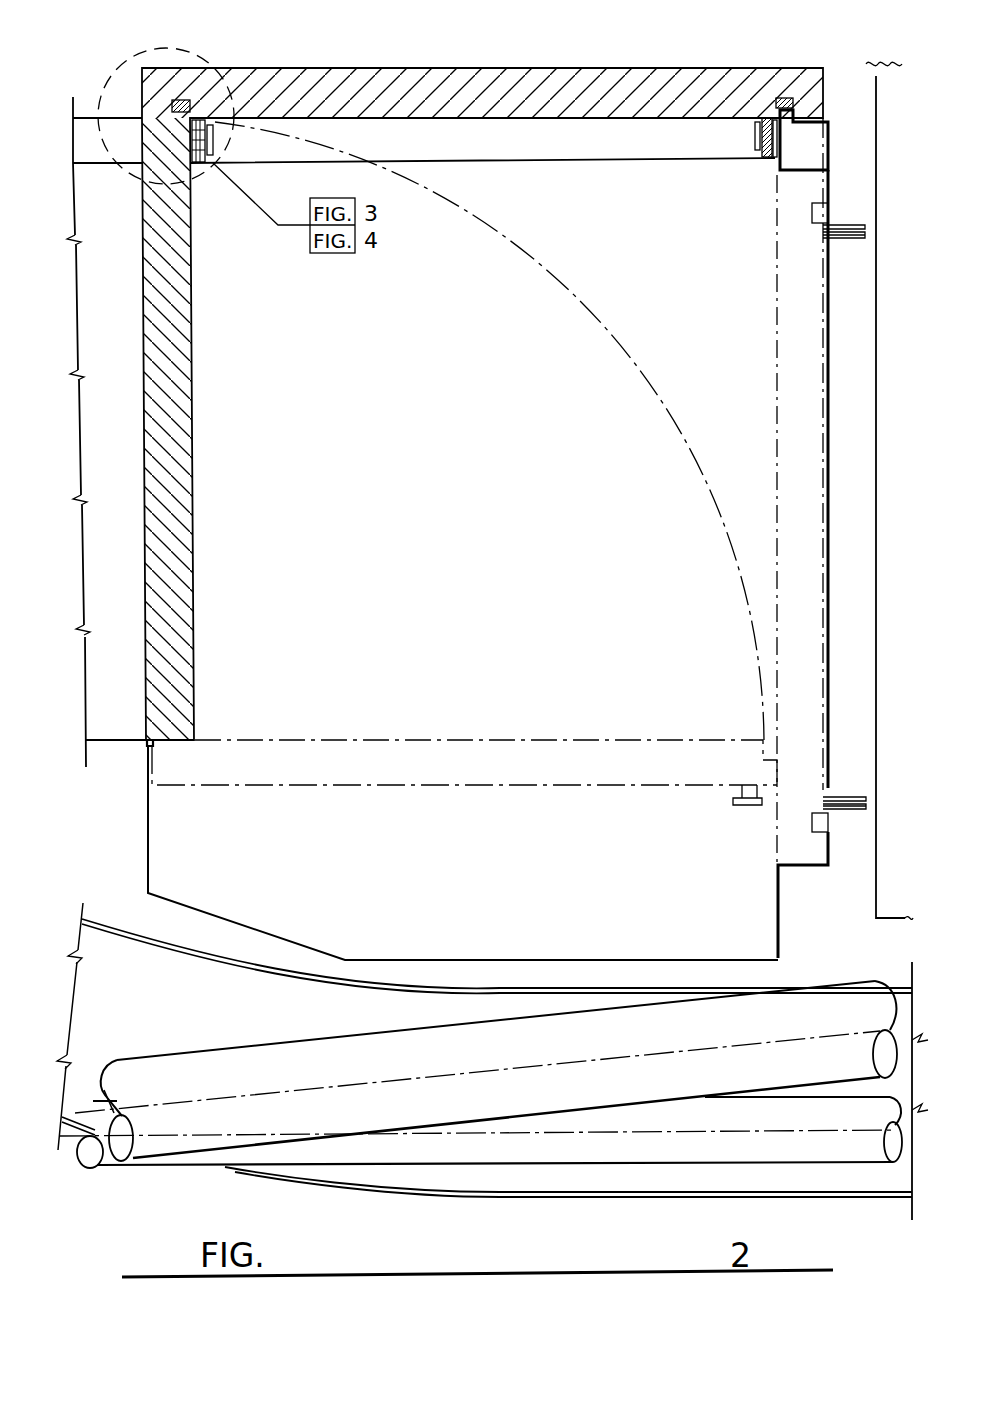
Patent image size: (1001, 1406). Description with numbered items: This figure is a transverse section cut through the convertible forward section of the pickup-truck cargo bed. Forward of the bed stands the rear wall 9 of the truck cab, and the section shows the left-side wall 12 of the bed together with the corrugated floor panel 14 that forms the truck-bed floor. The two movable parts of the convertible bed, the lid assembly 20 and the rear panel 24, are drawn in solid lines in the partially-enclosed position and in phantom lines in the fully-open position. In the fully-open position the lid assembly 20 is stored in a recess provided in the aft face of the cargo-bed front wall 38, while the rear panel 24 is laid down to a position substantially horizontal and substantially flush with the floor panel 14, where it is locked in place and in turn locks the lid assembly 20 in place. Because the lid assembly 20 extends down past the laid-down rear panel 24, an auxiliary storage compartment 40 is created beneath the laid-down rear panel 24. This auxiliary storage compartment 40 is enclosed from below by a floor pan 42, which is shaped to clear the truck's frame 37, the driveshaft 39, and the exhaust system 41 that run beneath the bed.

The rear wall 9 is at (864, 326).
The left-side wall 12 is at (95, 122).
The corrugated floor panel 14 is at (108, 740).
The lid assembly 20 is at (458, 65).
The rear panel 24 is at (146, 385).
The frame 37 is at (118, 920).
The cargo-bed front wall 38 is at (828, 431).
The driveshaft 39 is at (874, 956).
The auxiliary storage compartment 40 is at (486, 901).
The exhaust system 41 is at (116, 1168).
The floor pan 42 is at (372, 957).